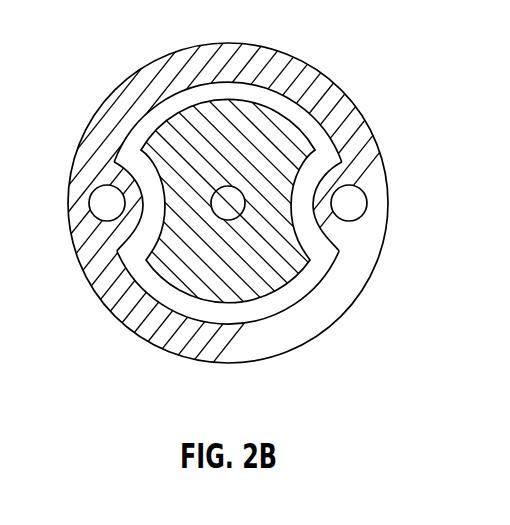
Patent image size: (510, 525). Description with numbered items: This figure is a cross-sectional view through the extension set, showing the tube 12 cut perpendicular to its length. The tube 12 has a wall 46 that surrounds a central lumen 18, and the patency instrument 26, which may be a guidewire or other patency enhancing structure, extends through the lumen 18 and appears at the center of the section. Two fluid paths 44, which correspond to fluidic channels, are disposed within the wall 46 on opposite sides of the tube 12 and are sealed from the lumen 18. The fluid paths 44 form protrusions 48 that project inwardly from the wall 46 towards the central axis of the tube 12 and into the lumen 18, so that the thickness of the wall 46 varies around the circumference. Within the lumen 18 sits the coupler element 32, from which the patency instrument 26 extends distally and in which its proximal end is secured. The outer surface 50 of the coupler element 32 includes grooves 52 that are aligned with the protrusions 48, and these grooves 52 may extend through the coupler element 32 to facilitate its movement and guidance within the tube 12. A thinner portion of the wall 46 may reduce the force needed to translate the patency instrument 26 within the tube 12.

The tube 12 is at (312, 70).
The lumen 18 is at (322, 142).
The patency instrument 26 is at (230, 207).
The coupler element 32 is at (208, 292).
The fluid paths 44 is at (108, 205).
The wall 46 is at (122, 103).
The protrusions 48 is at (120, 177).
The outer surface of the coupler element 50 is at (222, 100).
The grooves 52 is at (118, 246).